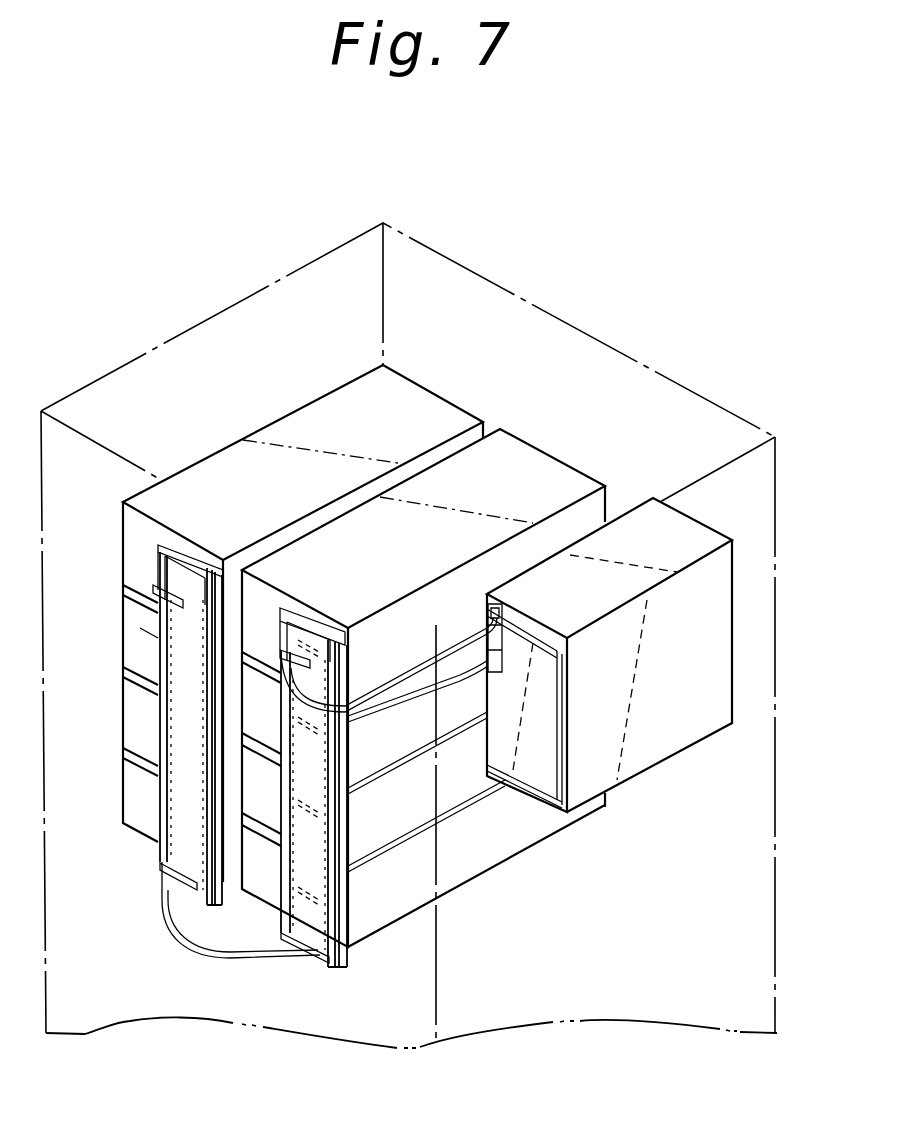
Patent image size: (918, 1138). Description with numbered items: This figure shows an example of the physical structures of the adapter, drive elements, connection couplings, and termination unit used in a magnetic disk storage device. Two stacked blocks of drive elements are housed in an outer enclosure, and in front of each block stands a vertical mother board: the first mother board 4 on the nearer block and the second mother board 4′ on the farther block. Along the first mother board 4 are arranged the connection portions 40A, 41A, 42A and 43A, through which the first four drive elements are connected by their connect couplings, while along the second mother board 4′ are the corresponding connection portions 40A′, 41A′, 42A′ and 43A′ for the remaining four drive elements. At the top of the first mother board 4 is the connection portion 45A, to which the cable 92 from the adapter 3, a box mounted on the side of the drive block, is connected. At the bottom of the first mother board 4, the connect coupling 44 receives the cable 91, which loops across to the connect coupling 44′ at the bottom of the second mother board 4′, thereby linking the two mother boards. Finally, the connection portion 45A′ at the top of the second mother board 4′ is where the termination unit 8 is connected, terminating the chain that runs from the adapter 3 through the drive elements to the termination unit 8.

The adapter 3 is at (618, 545).
The termination unit 8 is at (187, 580).
The connection portion 45A′ is at (175, 593).
The connection portion 45A is at (303, 645).
The mother board No. 1 4′ is at (158, 833).
The mother board No. 0 4 is at (306, 827).
The connect coupling 44′ is at (180, 926).
The connect coupling 44 is at (310, 952).
The connection portion 40A′ is at (160, 582).
The connection portion 41A′ is at (140, 628).
The connection portion 42A′ is at (158, 717).
The connection portion 43A′ is at (158, 797).
The connection portion 40A is at (347, 652).
The connection portion 41A is at (341, 736).
The connection portion 42A is at (331, 822).
The connection portion 43A is at (331, 913).
The cable 91 is at (191, 948).
The cable 92 is at (400, 702).